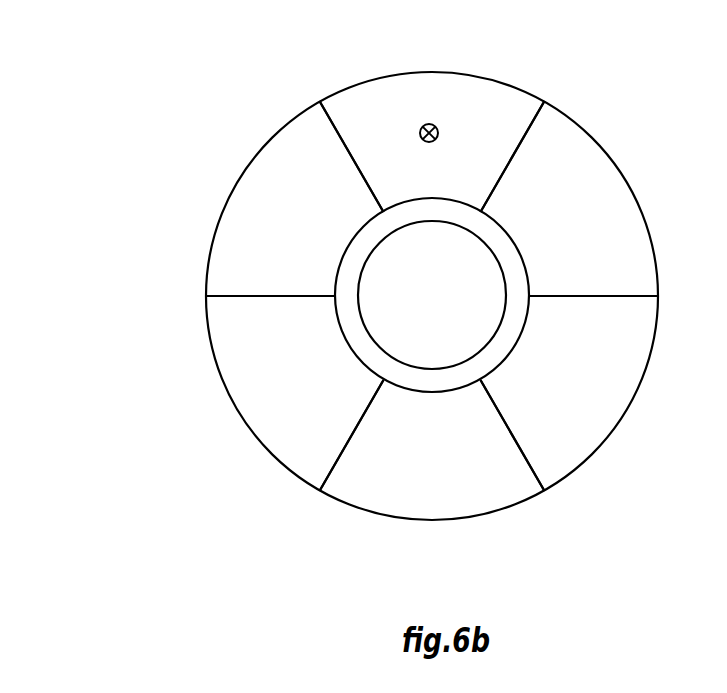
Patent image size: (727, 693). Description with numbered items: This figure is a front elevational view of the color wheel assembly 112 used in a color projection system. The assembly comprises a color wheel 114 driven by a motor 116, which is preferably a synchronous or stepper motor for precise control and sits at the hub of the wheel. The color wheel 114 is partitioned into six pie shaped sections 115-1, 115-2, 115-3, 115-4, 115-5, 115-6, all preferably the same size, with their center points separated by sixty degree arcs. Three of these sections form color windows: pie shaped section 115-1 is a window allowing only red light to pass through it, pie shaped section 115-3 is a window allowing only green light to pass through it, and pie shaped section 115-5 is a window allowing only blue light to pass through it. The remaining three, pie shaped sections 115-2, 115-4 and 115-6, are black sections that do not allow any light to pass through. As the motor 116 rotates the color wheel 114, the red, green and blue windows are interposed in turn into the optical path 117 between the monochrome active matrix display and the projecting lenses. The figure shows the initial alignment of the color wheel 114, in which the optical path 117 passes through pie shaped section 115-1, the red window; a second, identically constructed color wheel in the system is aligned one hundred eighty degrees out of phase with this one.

The color wheel assembly 112 is at (124, 188).
The color wheel 114 is at (532, 95).
The pie shaped section 115-1 is at (464, 106).
The pie shaped section 115-2 is at (329, 169).
The pie shaped section 115-3 is at (336, 436).
The pie shaped section 115-4 is at (464, 501).
The pie shaped section 115-5 is at (597, 436).
The pie shaped section 115-6 is at (599, 169).
The motor 116 is at (453, 302).
The optical path 117 is at (419, 131).